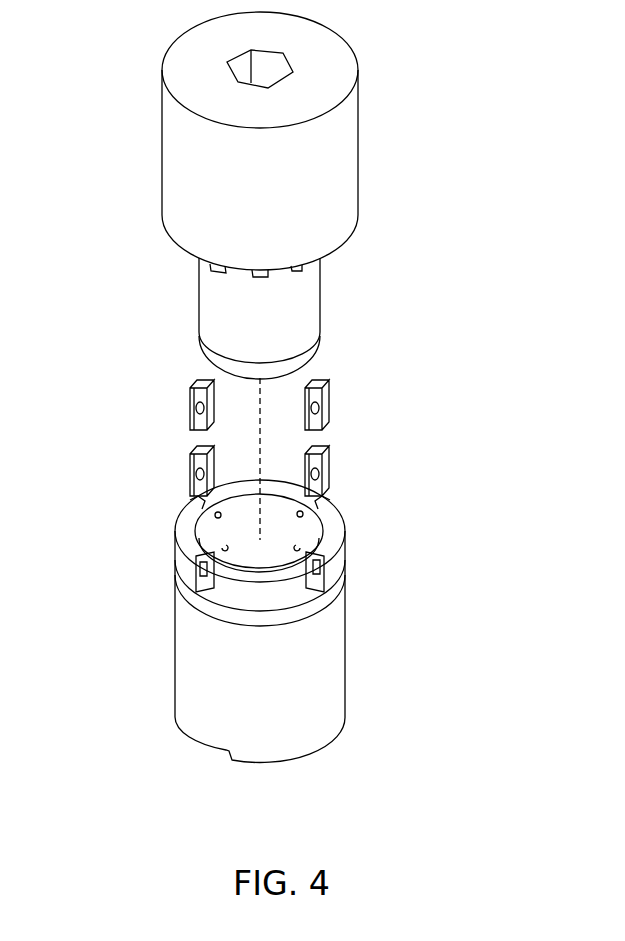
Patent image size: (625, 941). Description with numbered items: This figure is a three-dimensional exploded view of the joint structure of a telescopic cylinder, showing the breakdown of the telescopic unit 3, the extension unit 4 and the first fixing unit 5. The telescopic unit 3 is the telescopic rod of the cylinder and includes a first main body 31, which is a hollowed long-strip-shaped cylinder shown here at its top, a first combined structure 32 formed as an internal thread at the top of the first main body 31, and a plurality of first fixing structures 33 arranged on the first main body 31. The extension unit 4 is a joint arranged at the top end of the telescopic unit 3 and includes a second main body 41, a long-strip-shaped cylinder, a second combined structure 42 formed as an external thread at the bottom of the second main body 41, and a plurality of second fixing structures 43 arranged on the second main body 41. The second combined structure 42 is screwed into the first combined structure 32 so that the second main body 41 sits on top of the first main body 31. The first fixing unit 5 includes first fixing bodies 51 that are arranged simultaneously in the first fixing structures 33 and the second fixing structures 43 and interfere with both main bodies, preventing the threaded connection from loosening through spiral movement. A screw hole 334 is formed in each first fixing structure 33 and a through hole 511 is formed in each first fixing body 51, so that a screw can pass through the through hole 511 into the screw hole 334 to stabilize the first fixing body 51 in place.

The telescopic unit 3 is at (160, 663).
The first main body 31 is at (315, 663).
The first combined structure 32 is at (322, 523).
The first fixing structure 33 is at (322, 572).
The screw hole 334 is at (323, 565).
The extension unit 4 is at (147, 167).
The second main body 41 is at (310, 192).
The second combined structure 42 is at (293, 313).
The second fixing structure 43 is at (318, 268).
The first fixing unit 5 is at (91, 378).
The first fixing body 51 is at (188, 408).
The through hole 511 is at (193, 425).